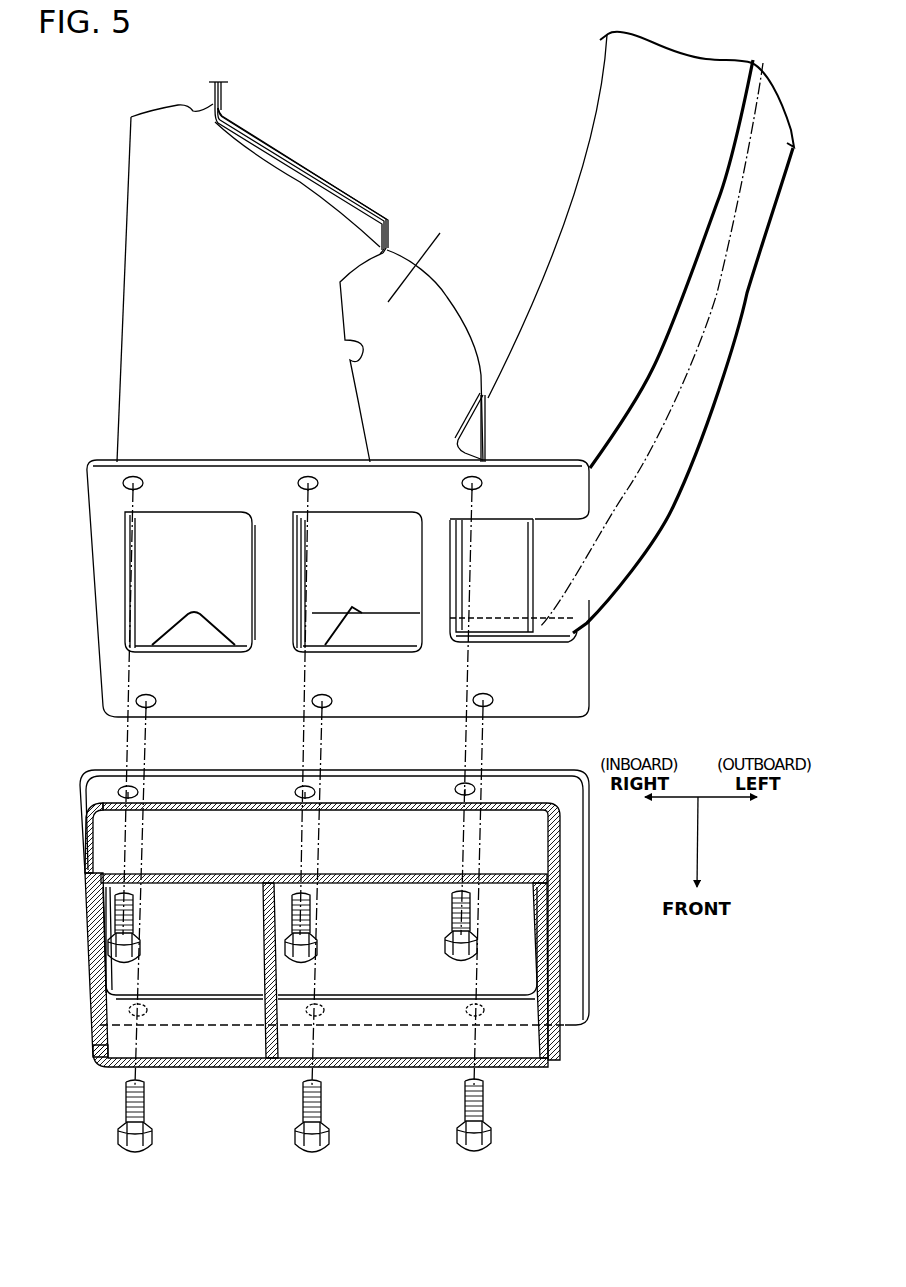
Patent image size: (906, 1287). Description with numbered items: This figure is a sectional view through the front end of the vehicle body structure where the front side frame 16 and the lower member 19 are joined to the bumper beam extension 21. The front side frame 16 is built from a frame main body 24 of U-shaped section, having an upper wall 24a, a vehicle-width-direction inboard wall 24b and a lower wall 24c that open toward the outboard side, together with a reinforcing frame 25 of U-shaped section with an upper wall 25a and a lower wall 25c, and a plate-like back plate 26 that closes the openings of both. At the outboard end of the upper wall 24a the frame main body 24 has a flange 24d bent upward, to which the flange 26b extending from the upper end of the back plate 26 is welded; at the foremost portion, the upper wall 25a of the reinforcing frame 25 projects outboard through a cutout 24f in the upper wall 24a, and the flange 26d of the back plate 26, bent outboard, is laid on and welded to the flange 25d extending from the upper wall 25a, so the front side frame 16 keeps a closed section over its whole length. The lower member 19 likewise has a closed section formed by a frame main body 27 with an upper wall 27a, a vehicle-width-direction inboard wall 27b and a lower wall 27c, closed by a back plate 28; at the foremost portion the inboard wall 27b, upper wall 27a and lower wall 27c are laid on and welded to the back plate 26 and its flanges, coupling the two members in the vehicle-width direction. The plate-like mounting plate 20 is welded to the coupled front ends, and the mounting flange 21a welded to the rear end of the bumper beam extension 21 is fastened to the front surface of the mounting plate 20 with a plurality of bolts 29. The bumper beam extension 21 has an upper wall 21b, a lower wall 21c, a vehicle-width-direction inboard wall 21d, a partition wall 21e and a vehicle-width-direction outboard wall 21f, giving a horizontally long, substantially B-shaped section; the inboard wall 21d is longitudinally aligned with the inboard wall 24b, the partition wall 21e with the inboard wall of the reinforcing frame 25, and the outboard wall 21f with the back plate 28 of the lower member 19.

The front side frame 16 is at (107, 196).
The lower member 19 is at (565, 143).
The mounting plate 20 is at (257, 487).
The bumper beam extension 21 is at (568, 1038).
The mounting flange 21a is at (263, 780).
The upper wall 21b is at (395, 857).
The lower wall 21c is at (393, 1045).
The vehicle-width-direction inboard wall 21d is at (88, 973).
The partition wall 21e is at (267, 943).
The vehicle-width-direction outboard wall 21f is at (547, 963).
The frame main body 24 is at (120, 342).
The upper wall 24a is at (153, 275).
The vehicle-width-direction inboard wall 24b is at (118, 378).
The lower wall 24c is at (150, 612).
The flange 24d is at (298, 175).
The cutout 24f is at (345, 337).
The reinforcing frame 25 is at (448, 297).
The upper wall 25a is at (388, 302).
The lower wall 25c is at (348, 596).
The flange 25d is at (447, 337).
The back plate 26 is at (488, 428).
The flange 26b is at (325, 173).
The flange 26d is at (467, 417).
The frame main body 27 is at (597, 98).
The upper wall 27a is at (593, 252).
The vehicle-width-direction inboard wall 27b is at (577, 183).
The lower wall 27c is at (517, 585).
The back plate 28 is at (667, 410).
The bolts 29 is at (128, 953).